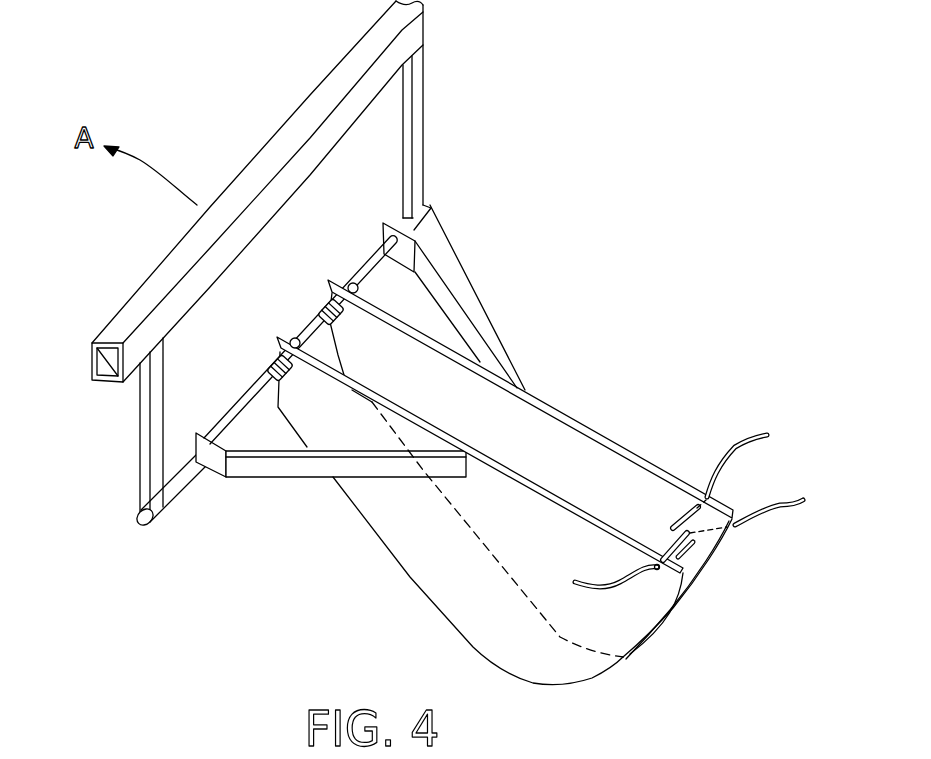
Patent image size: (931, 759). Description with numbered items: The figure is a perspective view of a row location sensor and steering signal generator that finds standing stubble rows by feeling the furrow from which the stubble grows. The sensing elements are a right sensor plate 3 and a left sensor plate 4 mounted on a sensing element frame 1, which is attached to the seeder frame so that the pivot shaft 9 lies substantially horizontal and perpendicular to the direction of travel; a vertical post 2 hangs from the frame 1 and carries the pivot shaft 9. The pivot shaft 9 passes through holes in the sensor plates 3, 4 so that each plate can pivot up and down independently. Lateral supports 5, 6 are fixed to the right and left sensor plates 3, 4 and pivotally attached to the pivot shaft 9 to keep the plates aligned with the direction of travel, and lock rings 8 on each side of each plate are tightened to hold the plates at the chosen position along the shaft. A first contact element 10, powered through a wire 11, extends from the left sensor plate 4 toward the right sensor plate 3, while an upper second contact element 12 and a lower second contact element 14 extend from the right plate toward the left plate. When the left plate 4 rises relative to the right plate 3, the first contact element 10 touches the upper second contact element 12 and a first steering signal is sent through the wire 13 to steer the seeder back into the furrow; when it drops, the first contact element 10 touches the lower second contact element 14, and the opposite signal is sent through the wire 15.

The sensing element frame 1 is at (233, 183).
The vertical post 2 is at (428, 114).
The right sensor plate 3 is at (573, 412).
The left sensor plate 4 is at (410, 578).
The lateral support 5 is at (457, 292).
The lateral support 6 is at (283, 478).
The lock rings 8 is at (343, 280).
The pivot shaft 9 is at (182, 492).
The first contact element 10 is at (663, 552).
The wire 11 is at (600, 584).
The upper second contact element 12 is at (682, 515).
The wire 13 is at (728, 445).
The lower second contact element 14 is at (717, 557).
The wire hook 15 is at (770, 517).